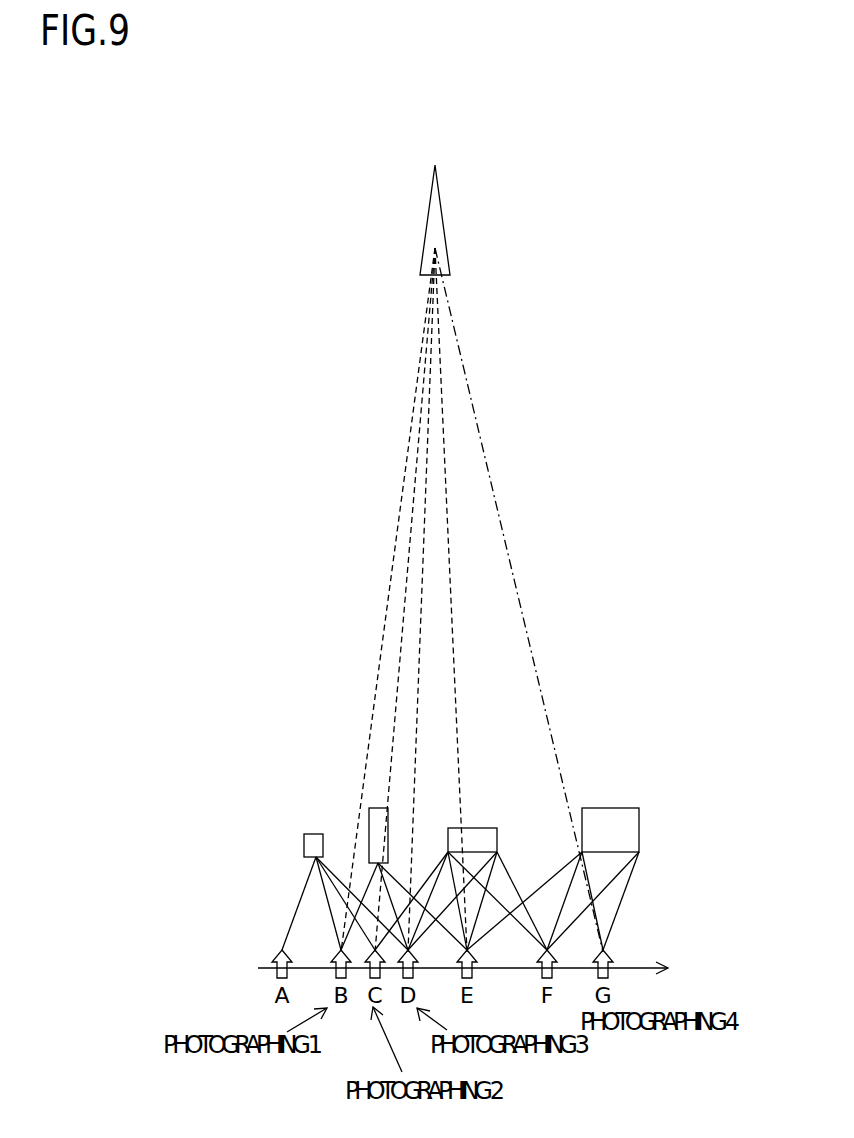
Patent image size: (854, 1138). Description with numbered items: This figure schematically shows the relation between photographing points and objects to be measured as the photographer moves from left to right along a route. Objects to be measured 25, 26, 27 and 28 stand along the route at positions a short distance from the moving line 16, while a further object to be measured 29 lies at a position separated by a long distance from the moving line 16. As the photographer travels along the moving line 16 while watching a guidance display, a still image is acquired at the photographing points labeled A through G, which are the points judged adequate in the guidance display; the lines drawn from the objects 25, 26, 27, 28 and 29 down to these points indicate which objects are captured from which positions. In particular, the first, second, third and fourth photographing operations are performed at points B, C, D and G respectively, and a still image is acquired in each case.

The moving line 16 is at (635, 966).
The object to be measured 25 is at (304, 849).
The object to be measured 26 is at (369, 820).
The object to be measured 27 is at (482, 828).
The object to be measured 28 is at (640, 830).
The object to be measured 29 is at (446, 218).